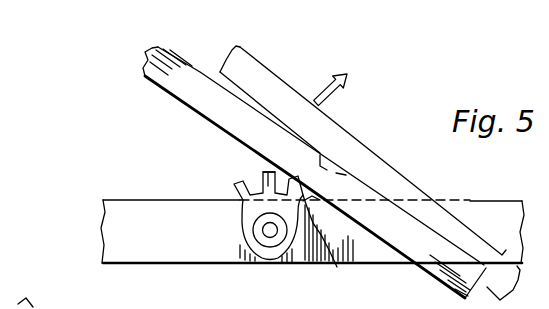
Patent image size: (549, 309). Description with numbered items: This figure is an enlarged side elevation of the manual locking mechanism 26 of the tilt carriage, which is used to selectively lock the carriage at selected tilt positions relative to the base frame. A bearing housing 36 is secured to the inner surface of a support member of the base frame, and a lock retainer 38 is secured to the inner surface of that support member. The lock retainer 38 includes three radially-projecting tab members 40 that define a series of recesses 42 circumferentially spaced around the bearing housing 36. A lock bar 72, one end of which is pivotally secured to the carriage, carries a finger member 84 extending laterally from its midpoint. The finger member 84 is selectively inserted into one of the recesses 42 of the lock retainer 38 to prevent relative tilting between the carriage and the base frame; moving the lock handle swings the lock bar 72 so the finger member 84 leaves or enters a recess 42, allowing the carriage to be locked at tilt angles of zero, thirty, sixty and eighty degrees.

The manual locking mechanism 26 is at (130, 149).
The bearing housing 36 is at (275, 248).
The lock retainer 38 is at (312, 250).
The tab members 40 is at (230, 217).
The recesses 42 is at (258, 176).
The lock bar 72 is at (324, 172).
The finger member 84 is at (336, 245).